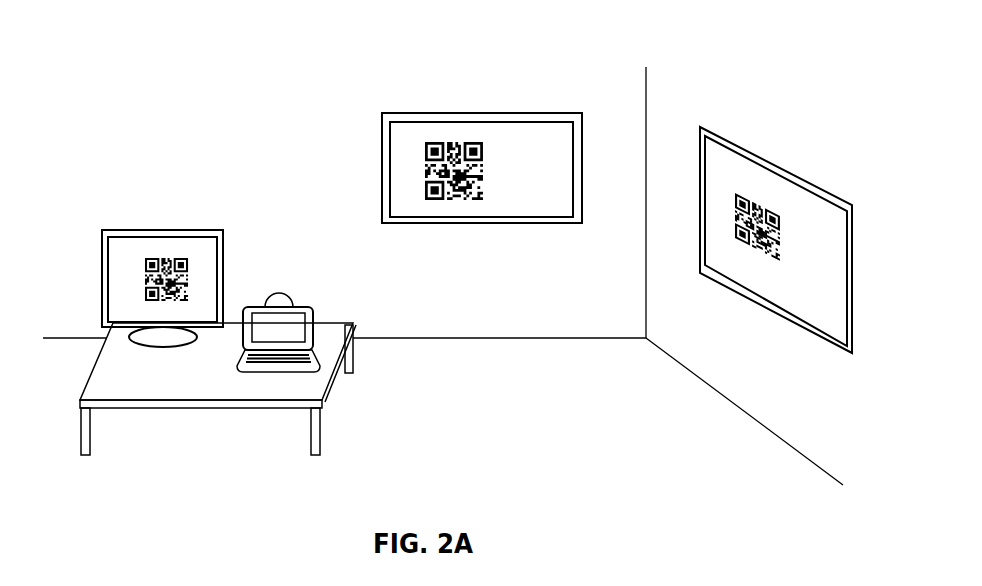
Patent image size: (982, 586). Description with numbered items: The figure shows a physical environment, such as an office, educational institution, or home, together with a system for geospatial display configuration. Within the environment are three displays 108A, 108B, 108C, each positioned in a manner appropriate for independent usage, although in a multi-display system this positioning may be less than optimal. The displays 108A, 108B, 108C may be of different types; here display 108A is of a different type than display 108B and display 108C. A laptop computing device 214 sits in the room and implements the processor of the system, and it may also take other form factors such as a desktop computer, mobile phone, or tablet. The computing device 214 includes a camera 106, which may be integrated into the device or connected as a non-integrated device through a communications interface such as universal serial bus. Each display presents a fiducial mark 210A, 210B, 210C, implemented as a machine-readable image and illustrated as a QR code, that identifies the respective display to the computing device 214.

The display 108A is at (143, 228).
The display 108B is at (392, 113).
The display 108C is at (725, 138).
The fiducial mark 210A is at (172, 255).
The fiducial mark 210B is at (458, 138).
The fiducial mark 210C is at (768, 200).
The camera 106 is at (288, 295).
The laptop computing device 214 is at (317, 318).